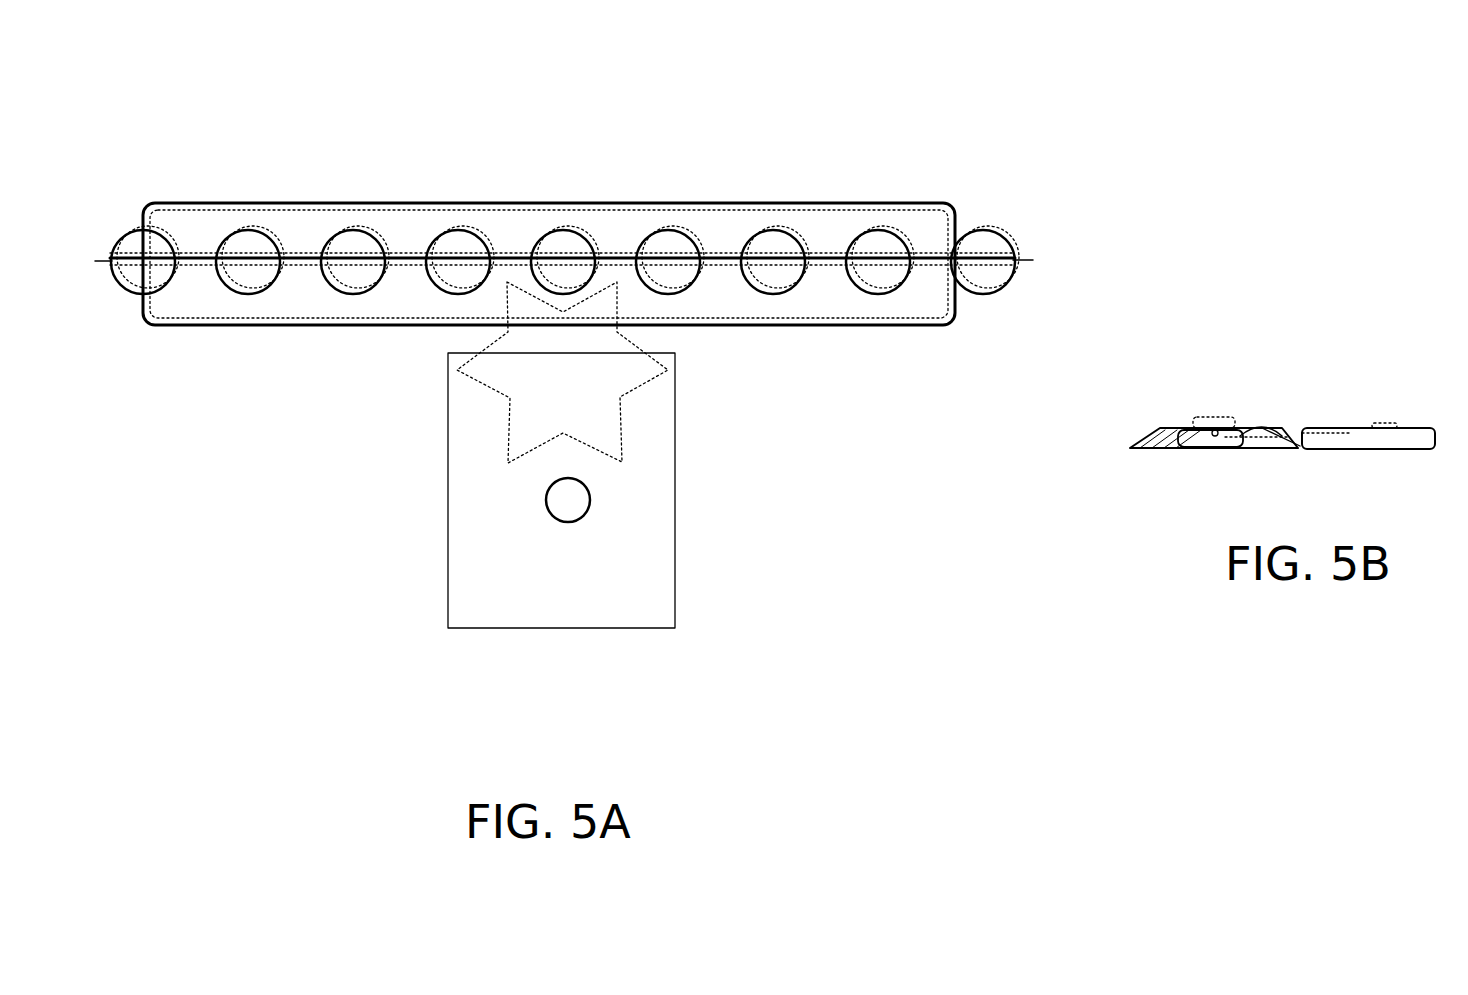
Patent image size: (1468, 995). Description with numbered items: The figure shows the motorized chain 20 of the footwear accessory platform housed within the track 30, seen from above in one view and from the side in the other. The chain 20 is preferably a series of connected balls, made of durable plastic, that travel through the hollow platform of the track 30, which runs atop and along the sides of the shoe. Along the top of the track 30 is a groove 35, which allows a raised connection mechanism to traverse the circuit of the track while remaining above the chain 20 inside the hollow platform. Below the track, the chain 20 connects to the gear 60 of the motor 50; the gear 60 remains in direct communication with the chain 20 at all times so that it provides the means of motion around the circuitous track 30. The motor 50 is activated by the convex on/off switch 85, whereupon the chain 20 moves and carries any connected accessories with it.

In FIG. 5A, the chain 20 is at (873, 277).
In FIG. 5B, the chain 20 is at (1202, 433).
In FIG. 5A, the track 30 is at (930, 213).
In FIG. 5A, the groove 35 is at (508, 260).
In FIG. 5A, the motor 50 is at (568, 467).
In FIG. 5B, the motor 50 is at (1358, 433).
In FIG. 5A, the gear 60 is at (533, 342).
In FIG. 5A, the on/off switch 85 is at (557, 503).
In FIG. 5B, the on/off switch 85 is at (1387, 413).